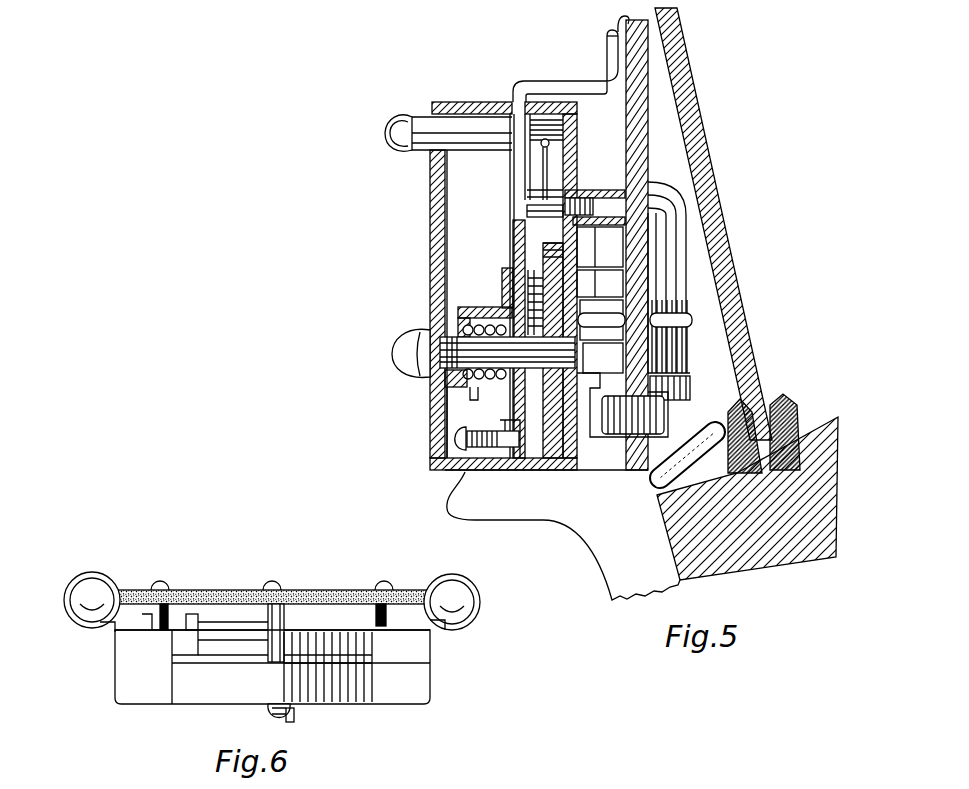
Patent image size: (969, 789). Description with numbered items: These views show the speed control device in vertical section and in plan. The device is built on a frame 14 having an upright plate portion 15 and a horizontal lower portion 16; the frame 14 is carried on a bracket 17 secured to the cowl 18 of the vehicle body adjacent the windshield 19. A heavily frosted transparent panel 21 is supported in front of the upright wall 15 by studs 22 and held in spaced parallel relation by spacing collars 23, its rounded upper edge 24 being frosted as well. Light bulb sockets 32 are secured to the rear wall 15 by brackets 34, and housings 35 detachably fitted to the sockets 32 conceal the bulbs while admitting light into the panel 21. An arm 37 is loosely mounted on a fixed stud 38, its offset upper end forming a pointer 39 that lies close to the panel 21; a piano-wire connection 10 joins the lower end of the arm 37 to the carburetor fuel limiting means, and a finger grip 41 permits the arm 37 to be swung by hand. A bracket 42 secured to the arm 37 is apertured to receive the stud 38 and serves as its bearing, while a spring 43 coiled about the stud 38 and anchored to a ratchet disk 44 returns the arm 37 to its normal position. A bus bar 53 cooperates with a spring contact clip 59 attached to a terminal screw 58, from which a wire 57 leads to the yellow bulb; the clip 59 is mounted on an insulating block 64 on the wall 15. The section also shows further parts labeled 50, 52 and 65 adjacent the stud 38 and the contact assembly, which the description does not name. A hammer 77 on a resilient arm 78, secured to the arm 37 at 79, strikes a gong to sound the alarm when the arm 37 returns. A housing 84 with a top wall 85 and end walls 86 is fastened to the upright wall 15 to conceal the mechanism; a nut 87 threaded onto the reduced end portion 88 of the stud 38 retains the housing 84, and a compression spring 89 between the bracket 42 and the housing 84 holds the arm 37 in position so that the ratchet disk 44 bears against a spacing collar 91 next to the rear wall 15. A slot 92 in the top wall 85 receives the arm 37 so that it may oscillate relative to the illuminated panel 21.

In FIG. 5, the connection 10 is at (488, 471).
In FIG. 5, the frame 14 is at (592, 473).
In FIG. 5, the upright plate portion 15 is at (578, 128).
In FIG. 6, the upright plate portion 15 is at (191, 641).
In FIG. 5, the horizontal lower portion 16 is at (469, 473).
In FIG. 5, the bracket 17 is at (545, 521).
In FIG. 5, the cowl 18 is at (750, 572).
In FIG. 5, the windshield 19 is at (752, 297).
In FIG. 5, the panel 21 is at (652, 108).
In FIG. 6, the panel 21 is at (305, 590).
In FIG. 5, the studs 22 is at (661, 201).
In FIG. 6, the studs 22 is at (162, 588).
In FIG. 5, the spacing collars 23 is at (592, 189).
In FIG. 6, the spacing collars 23 is at (171, 606).
In FIG. 5, the upper edge 24 is at (620, 22).
In FIG. 6, the upper edge 24 is at (231, 590).
In FIG. 5, the socket 32 is at (690, 344).
In FIG. 5, the brackets 34 is at (681, 383).
In FIG. 6, the brackets 34 is at (112, 628).
In FIG. 5, the housings 35 is at (676, 282).
In FIG. 6, the housings 35 is at (94, 597).
In FIG. 5, the arm 37 is at (554, 81).
In FIG. 5, the stud 38 is at (445, 376).
In FIG. 5, the pointer 39 is at (609, 43).
In FIG. 5, the finger grip 41 is at (390, 125).
In FIG. 6, the finger grip 41 is at (270, 718).
In FIG. 5, the bracket 42 is at (445, 411).
In FIG. 5, the spring 43 is at (481, 387).
In FIG. 5, the ratchet disk 44 is at (504, 290).
In FIG. 5, the contact block 50 is at (546, 268).
In FIG. 5, the collar 52 is at (524, 256).
In FIG. 5, the bus bar 53 is at (532, 300).
In FIG. 5, the wire 57 is at (651, 480).
In FIG. 5, the terminal screw 58 is at (499, 418).
In FIG. 5, the spring contact clip 59 is at (606, 428).
In FIG. 5, the insulating block 64 is at (549, 471).
In FIG. 5, the screw 65 is at (478, 436).
In FIG. 5, the hammer 77 is at (551, 145).
In FIG. 5, the resilient arm 78 is at (600, 191).
In FIG. 5, the securing point 79 is at (528, 213).
In FIG. 5, the housing 84 is at (430, 202).
In FIG. 5, the top wall 85 is at (461, 100).
In FIG. 6, the top wall 85 is at (200, 705).
In FIG. 5, the end walls 86 is at (450, 236).
In FIG. 6, the end walls 86 is at (115, 691).
In FIG. 5, the nut 87 is at (398, 351).
In FIG. 6, the nut 87 is at (292, 721).
In FIG. 5, the reduced end portion 88 is at (441, 340).
In FIG. 5, the compression spring 89 is at (452, 325).
In FIG. 5, the spacing collar 91 is at (506, 307).
In FIG. 5, the slot 92 is at (511, 101).
In FIG. 6, the slot 92 is at (334, 692).